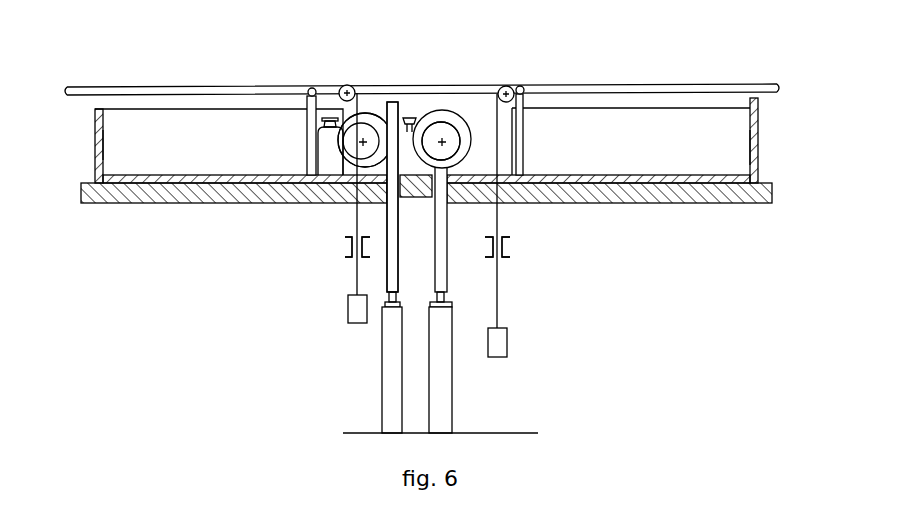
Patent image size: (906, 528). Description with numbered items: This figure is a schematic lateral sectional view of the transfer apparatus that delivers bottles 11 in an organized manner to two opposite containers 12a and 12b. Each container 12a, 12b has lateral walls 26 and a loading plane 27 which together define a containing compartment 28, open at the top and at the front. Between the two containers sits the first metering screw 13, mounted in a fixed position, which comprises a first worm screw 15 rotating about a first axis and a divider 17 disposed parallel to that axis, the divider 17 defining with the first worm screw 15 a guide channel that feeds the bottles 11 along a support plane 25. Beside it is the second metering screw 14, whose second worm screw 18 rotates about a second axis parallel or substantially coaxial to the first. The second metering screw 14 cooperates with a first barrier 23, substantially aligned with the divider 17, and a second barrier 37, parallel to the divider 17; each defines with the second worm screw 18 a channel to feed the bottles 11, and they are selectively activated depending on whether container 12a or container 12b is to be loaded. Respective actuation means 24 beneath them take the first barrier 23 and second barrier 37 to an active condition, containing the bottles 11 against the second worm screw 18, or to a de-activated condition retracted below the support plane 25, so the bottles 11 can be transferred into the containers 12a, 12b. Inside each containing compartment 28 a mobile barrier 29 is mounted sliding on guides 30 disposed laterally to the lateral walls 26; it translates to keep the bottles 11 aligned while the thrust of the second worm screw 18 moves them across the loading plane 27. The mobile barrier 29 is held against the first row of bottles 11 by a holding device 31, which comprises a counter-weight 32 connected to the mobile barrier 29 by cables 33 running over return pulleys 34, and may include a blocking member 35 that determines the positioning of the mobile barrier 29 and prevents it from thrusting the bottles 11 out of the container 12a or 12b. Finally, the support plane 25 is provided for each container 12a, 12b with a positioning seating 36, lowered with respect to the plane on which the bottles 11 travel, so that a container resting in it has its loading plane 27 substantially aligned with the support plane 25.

The bottles 11 is at (327, 142).
The container 12a is at (92, 160).
The container 12b is at (763, 148).
The first metering screw 13 is at (450, 103).
The second metering screw 14 is at (378, 110).
The first worm screw 15 is at (457, 122).
The divider 17 is at (393, 107).
The second worm screw 18 is at (368, 118).
The first barrier 23 is at (392, 218).
The actuation means 24 is at (392, 412).
The support plane 25 is at (410, 177).
The lateral walls 26 is at (100, 152).
The loading plane 27 is at (193, 183).
The containing compartment 28 is at (103, 125).
The mobile barrier 29 is at (313, 162).
The guides 30 is at (197, 92).
The holding device 31 is at (340, 229).
The counter-weight 32 is at (357, 312).
The cables 33 is at (357, 280).
The return pulleys 34 is at (345, 92).
The blocking member 35 is at (348, 257).
The positioning seating 36 is at (228, 175).
The second barrier 37 is at (442, 253).